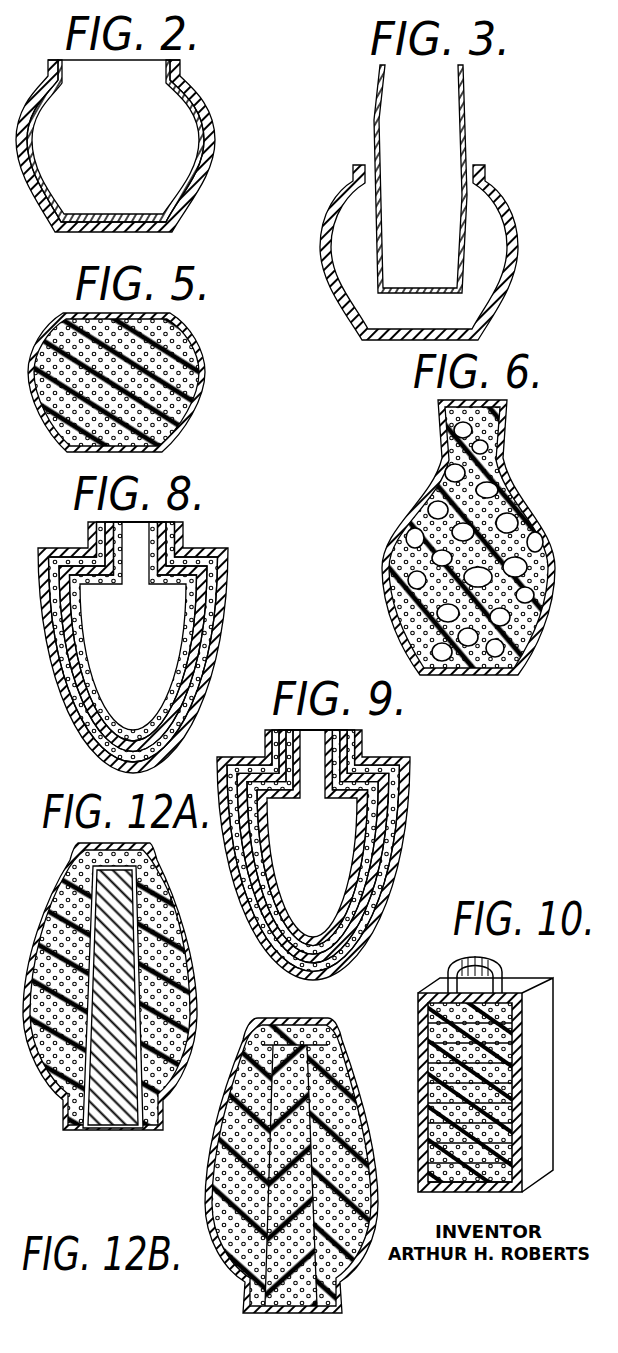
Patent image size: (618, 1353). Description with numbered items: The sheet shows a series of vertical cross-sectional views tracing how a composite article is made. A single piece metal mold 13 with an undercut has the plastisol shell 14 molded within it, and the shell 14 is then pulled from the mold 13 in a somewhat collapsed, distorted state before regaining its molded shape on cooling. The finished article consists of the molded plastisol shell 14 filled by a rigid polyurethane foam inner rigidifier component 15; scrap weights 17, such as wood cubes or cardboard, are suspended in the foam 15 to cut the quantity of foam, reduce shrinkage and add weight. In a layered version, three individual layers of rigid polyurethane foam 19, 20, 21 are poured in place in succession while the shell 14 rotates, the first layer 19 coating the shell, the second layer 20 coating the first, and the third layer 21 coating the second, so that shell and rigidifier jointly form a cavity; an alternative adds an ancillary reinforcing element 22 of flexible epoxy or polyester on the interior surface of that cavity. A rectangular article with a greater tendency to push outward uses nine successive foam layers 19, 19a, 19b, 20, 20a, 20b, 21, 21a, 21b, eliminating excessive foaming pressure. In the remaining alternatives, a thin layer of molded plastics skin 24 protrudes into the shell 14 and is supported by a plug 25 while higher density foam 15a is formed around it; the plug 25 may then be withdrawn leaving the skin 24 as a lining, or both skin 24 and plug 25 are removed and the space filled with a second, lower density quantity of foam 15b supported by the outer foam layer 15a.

In FIG. 2, the metal mold 13 is at (206, 101).
In FIG. 3, the metal mold 13 is at (518, 244).
In FIG. 2, the molded plastisol shell 14 is at (196, 171).
In FIG. 3, the molded plastisol shell 14 is at (466, 113).
In FIG. 5, the molded plastisol shell 14 is at (203, 363).
In FIG. 6, the molded plastisol shell 14 is at (512, 486).
In FIG. 8, the molded plastisol shell 14 is at (228, 601).
In FIG. 9, the molded plastisol shell 14 is at (408, 791).
In FIG. 12A, the molded plastisol shell 14 is at (73, 892).
In FIG. 12B, the molded plastisol shell 14 is at (218, 1141).
In FIG. 10, the molded plastisol shell 14 is at (523, 1184).
In FIG. 5, the rigid polyurethane foam inner rigidifier component 15 is at (186, 376).
In FIG. 6, the rigid polyurethane foam inner rigidifier component 15 is at (550, 521).
In FIG. 12A, the rigid polyurethane foam inner rigidifier component 15 is at (100, 1001).
In FIG. 12A, the rigid polyurethane foam 15a is at (43, 1068).
In FIG. 12B, the rigid polyurethane foam 15a is at (222, 1186).
In FIG. 12B, the second quantity of rigid polyurethane foam 15b is at (262, 1026).
In FIG. 6, the weights 17 is at (548, 599).
In FIG. 8, the first layer of rigid polyurethane foam 19 is at (194, 684).
In FIG. 9, the first layer of rigid polyurethane foam 19 is at (375, 906).
In FIG. 10, the first layer of rigid polyurethane foam 19 is at (428, 1172).
In FIG. 10, the layer of rigid polyurethane foam 19a is at (428, 1156).
In FIG. 10, the layer of rigid polyurethane foam 19b is at (428, 1130).
In FIG. 8, the second layer of rigid polyurethane foam 20 is at (196, 661).
In FIG. 9, the second layer of rigid polyurethane foam 20 is at (383, 879).
In FIG. 10, the second layer of rigid polyurethane foam 20 is at (520, 1111).
In FIG. 10, the layer of rigid polyurethane foam 20a is at (428, 1097).
In FIG. 10, the layer of rigid polyurethane foam 20b is at (428, 1072).
In FIG. 8, the third layer of rigid polyurethane foam 21 is at (185, 634).
In FIG. 9, the third layer of rigid polyurethane foam 21 is at (370, 823).
In FIG. 10, the third layer of rigid polyurethane foam 21 is at (428, 1049).
In FIG. 10, the layer of rigid polyurethane foam 21a is at (520, 1033).
In FIG. 10, the layer of rigid polyurethane foam 21b is at (428, 1013).
In FIG. 9, the ancillary reinforcing element 22 is at (362, 930).
In FIG. 12A, the thin layer of molded plastics skin 24 is at (92, 1134).
In FIG. 12A, the plug 25 is at (121, 1134).